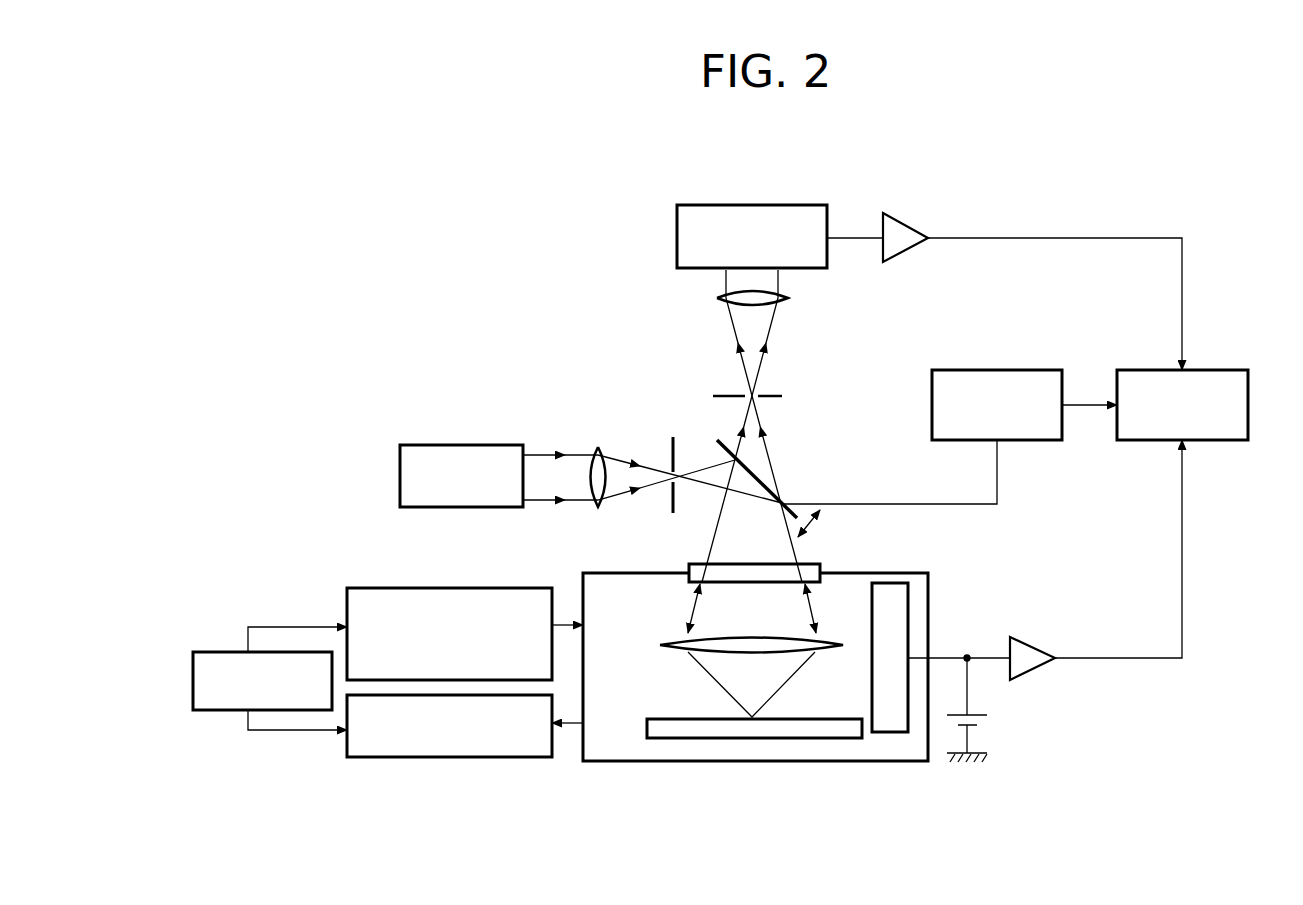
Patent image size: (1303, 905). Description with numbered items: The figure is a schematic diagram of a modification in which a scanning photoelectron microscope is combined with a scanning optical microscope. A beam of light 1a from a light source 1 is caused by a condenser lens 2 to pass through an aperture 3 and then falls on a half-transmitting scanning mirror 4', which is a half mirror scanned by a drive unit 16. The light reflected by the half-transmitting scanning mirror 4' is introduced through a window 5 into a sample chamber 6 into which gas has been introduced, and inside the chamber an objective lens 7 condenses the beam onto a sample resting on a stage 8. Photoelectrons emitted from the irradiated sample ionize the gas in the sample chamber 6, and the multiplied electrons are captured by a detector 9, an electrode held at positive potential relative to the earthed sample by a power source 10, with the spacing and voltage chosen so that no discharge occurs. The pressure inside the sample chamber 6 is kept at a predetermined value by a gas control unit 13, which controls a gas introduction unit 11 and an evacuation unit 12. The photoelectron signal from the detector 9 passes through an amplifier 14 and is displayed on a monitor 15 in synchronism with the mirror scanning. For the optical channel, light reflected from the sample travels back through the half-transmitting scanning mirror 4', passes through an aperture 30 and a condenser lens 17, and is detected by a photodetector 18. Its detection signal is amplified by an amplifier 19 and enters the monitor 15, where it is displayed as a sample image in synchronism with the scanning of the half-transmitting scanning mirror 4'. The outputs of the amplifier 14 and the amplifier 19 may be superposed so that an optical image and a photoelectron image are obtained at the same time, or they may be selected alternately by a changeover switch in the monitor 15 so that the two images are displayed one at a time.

The light source 1 is at (460, 445).
The beam of light 1a is at (542, 463).
The condenser lens 2 is at (597, 448).
The aperture 3 is at (678, 440).
The half-transmitting scanning mirror 4' is at (857, 488).
The window 5 is at (688, 580).
The sample chamber 6 is at (930, 582).
The objective lens 7 is at (660, 645).
The stage 8 is at (665, 718).
The detector 9 is at (895, 732).
The power source 10 is at (977, 690).
The gas introduction unit 11 is at (430, 588).
The evacuation unit 12 is at (430, 757).
The gas control unit 13 is at (205, 712).
The amplifier 14 is at (1025, 642).
The monitor 15 is at (1222, 370).
The drive unit 16 is at (980, 370).
The condenser lens 17 is at (788, 300).
The photodetector 18 is at (760, 205).
The amplifier 19 is at (905, 222).
The aperture 30 is at (783, 396).